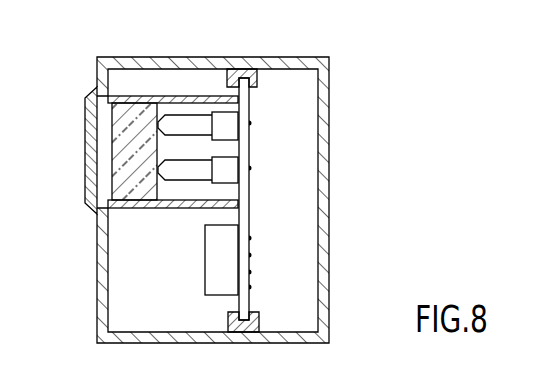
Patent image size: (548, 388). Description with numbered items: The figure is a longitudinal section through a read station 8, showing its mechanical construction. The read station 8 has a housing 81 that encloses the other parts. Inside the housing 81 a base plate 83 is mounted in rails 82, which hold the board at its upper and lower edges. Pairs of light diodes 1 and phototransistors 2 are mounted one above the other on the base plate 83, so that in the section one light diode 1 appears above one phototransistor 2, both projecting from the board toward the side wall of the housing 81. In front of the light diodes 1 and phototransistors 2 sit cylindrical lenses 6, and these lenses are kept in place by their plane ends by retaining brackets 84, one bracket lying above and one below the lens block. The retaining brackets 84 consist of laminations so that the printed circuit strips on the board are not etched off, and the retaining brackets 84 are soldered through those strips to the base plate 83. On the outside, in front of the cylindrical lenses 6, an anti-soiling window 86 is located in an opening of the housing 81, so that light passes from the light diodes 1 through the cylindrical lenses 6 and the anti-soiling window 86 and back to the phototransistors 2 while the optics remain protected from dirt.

The light diode 1 is at (190, 122).
The phototransistor 2 is at (184, 168).
The cylindrical lens 6 is at (116, 165).
The read station 8 is at (227, 183).
The housing 81 is at (323, 110).
The rail 82 is at (246, 70).
The base plate 83 is at (243, 108).
The retaining bracket 84 is at (140, 97).
The anti-soiling window 86 is at (88, 113).